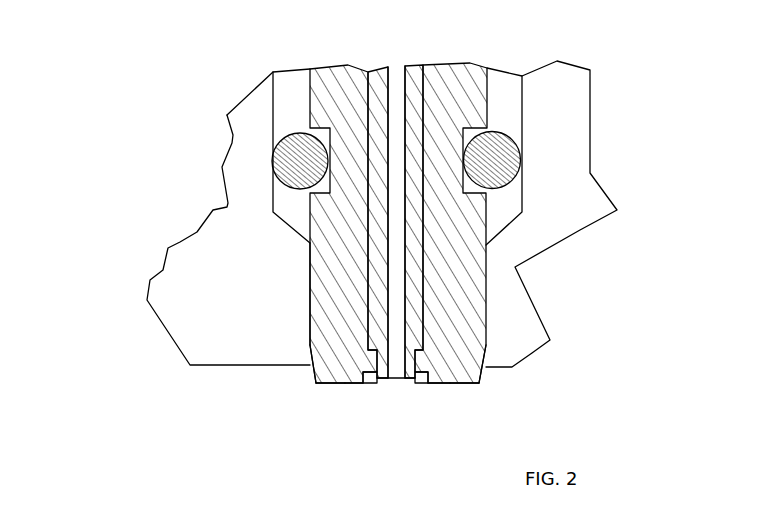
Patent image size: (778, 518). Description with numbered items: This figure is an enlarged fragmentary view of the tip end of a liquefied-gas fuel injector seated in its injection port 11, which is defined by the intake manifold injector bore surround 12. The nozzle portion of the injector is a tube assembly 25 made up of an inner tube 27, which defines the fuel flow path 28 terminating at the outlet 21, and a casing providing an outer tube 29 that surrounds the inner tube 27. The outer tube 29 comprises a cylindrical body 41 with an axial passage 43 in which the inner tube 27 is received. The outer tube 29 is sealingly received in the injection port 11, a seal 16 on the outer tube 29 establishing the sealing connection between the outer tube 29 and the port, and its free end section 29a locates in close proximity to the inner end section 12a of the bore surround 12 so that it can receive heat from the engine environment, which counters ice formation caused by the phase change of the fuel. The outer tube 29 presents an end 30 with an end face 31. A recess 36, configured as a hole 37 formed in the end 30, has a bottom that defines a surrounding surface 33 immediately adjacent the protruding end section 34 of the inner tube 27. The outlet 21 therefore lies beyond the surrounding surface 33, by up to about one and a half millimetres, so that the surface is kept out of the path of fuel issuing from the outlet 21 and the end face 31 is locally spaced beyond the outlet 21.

The injection port 11 is at (397, 365).
The intake manifold injector bore surround 12 is at (568, 187).
The inner end section of the manifold injector bore surround 12a is at (172, 217).
The seal 16 is at (588, 160).
The outlet 21 is at (396, 421).
The tube assembly 25 is at (563, 146).
The inner tube 27 is at (528, 221).
The fuel flow path 28 is at (398, 103).
The outer tube 29 is at (536, 223).
The free end section of the outer tube 29a is at (241, 324).
The end of the outer tube 30 is at (316, 418).
The end face 31 is at (340, 426).
The surrounding surface 33 is at (491, 396).
The end section of the inner tube 34 is at (449, 421).
The recess 36 is at (425, 425).
The hole 37 is at (366, 425).
The cylindrical body 41 is at (206, 137).
The axial passage 43 is at (259, 210).